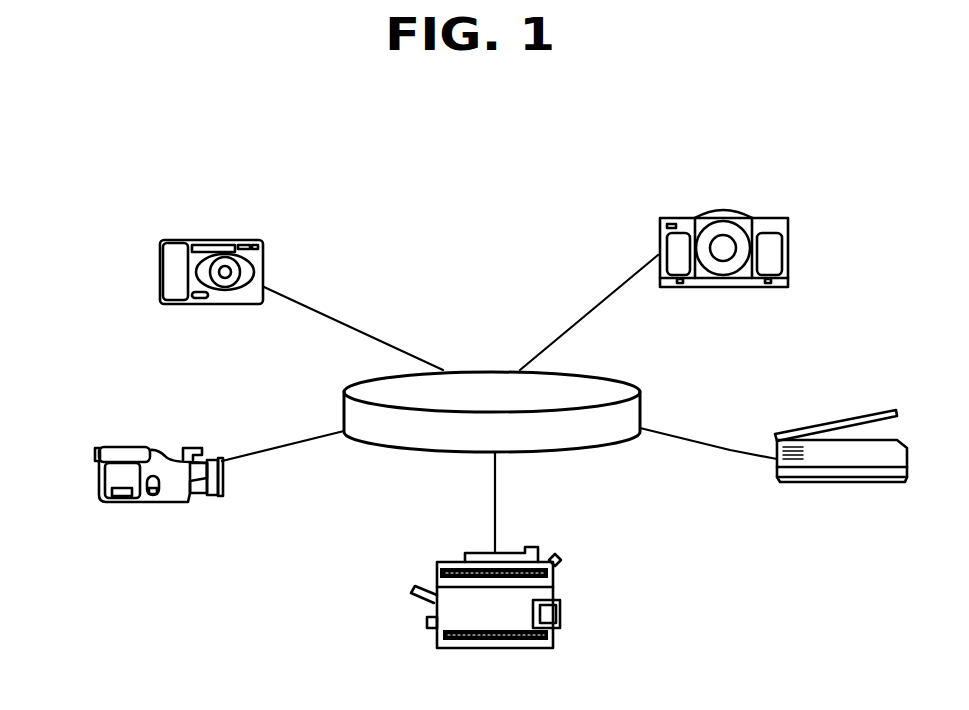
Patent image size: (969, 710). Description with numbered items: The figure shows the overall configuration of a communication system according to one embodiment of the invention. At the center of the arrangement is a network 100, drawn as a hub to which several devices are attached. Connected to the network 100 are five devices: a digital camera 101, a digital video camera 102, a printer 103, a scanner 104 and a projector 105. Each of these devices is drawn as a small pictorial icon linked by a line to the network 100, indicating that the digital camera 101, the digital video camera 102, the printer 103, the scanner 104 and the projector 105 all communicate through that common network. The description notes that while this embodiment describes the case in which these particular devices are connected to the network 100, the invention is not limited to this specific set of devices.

The network 100 is at (642, 400).
The digital camera 101 is at (212, 238).
The digital video camera 102 is at (128, 445).
The printer 103 is at (556, 590).
The scanner 104 is at (858, 418).
The projector 105 is at (765, 218).